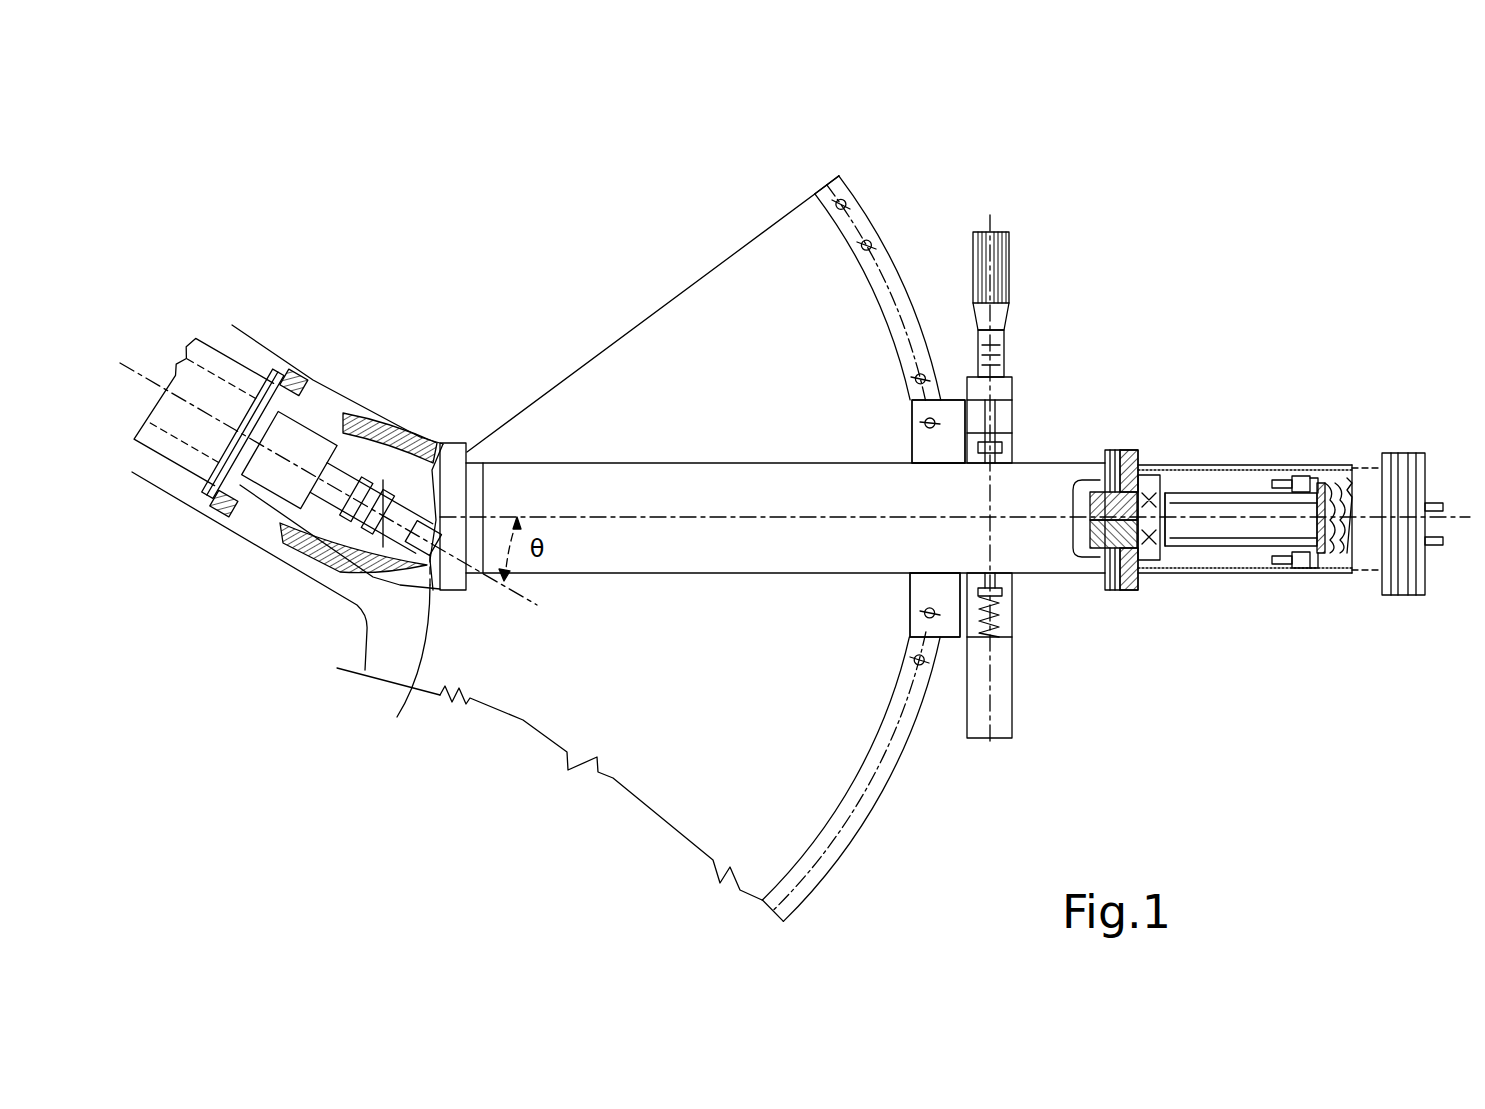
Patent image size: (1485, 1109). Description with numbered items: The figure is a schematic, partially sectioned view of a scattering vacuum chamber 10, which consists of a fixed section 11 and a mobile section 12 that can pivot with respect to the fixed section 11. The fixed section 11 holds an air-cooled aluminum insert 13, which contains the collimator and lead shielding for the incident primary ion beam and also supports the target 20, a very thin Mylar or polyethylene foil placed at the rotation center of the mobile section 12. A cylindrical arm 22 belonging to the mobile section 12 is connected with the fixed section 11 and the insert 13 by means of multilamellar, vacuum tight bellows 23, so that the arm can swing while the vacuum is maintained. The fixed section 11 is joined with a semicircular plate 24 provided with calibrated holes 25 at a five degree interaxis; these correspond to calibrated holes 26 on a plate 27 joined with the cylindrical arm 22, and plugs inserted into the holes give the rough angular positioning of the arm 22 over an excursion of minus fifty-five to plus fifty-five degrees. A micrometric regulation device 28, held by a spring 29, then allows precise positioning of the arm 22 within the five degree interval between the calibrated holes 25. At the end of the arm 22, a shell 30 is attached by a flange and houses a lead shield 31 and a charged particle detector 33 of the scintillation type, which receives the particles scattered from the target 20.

The scattering vacuum chamber 10 is at (326, 742).
The fixed section 11 is at (251, 524).
The mobile section 12 is at (1222, 497).
The aluminum insert 13 is at (362, 487).
The target 20 is at (408, 653).
The cylindrical arm 22 is at (715, 463).
The multilamellar vacuum tight bellows 23 is at (407, 432).
The semicircular plate 24 is at (652, 778).
The calibrated holes 25 is at (920, 372).
The calibrated holes 26 is at (943, 397).
The plate 27 is at (958, 397).
The micrometric regulation device 28 is at (1013, 285).
The spring 29 is at (1015, 626).
The shell 30 is at (1263, 466).
The lead shield 31 is at (1097, 490).
The charged particle detector 33 is at (1175, 492).